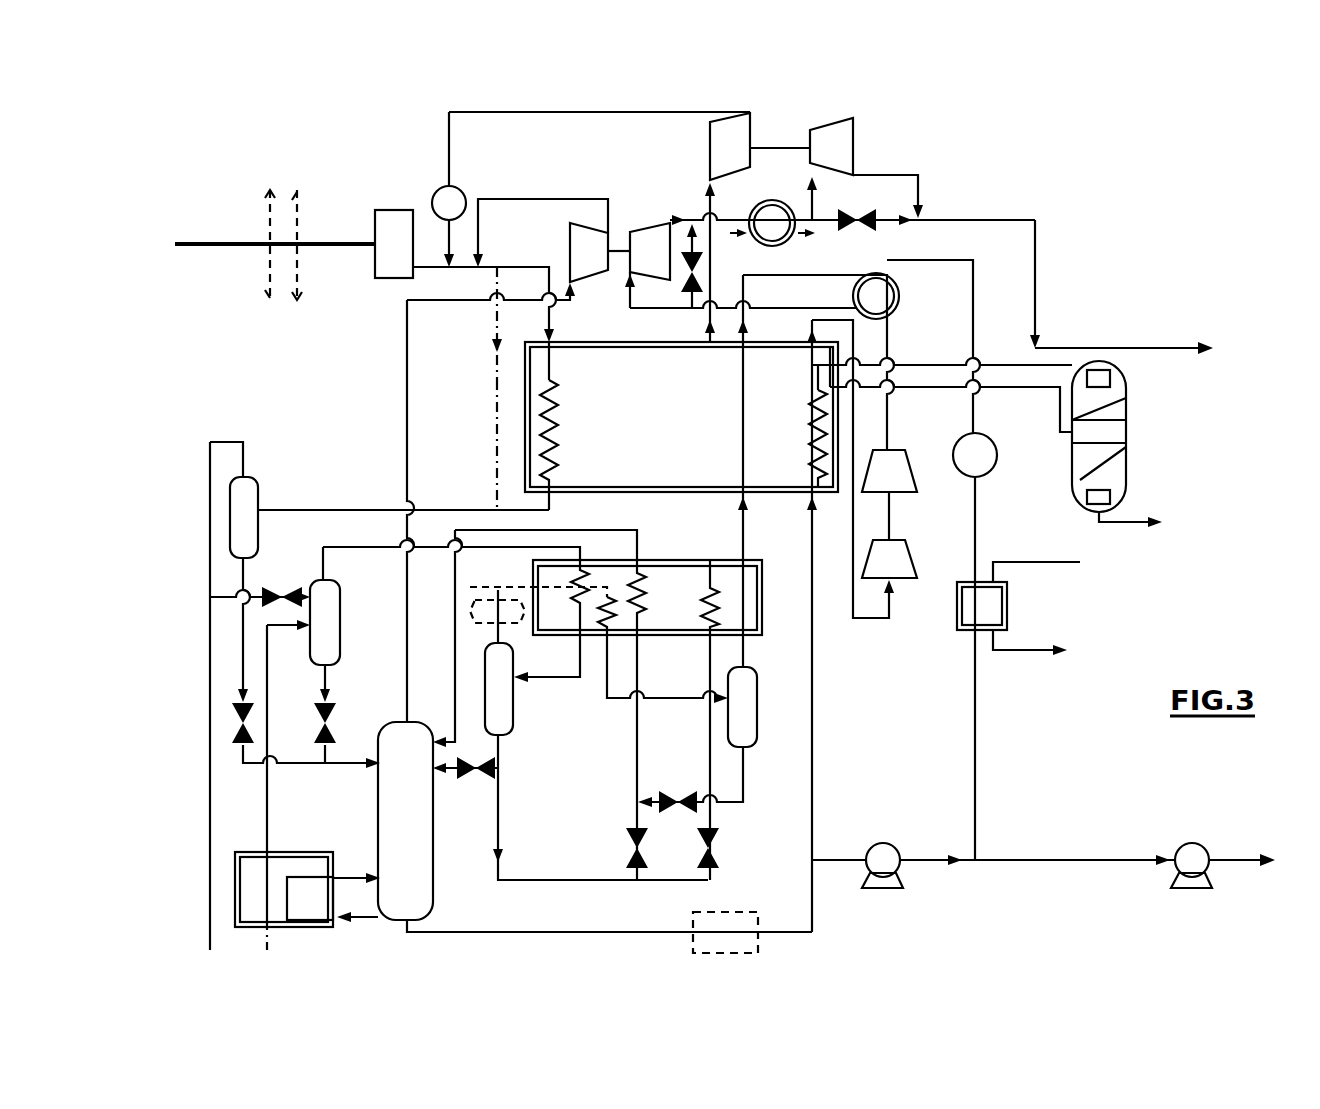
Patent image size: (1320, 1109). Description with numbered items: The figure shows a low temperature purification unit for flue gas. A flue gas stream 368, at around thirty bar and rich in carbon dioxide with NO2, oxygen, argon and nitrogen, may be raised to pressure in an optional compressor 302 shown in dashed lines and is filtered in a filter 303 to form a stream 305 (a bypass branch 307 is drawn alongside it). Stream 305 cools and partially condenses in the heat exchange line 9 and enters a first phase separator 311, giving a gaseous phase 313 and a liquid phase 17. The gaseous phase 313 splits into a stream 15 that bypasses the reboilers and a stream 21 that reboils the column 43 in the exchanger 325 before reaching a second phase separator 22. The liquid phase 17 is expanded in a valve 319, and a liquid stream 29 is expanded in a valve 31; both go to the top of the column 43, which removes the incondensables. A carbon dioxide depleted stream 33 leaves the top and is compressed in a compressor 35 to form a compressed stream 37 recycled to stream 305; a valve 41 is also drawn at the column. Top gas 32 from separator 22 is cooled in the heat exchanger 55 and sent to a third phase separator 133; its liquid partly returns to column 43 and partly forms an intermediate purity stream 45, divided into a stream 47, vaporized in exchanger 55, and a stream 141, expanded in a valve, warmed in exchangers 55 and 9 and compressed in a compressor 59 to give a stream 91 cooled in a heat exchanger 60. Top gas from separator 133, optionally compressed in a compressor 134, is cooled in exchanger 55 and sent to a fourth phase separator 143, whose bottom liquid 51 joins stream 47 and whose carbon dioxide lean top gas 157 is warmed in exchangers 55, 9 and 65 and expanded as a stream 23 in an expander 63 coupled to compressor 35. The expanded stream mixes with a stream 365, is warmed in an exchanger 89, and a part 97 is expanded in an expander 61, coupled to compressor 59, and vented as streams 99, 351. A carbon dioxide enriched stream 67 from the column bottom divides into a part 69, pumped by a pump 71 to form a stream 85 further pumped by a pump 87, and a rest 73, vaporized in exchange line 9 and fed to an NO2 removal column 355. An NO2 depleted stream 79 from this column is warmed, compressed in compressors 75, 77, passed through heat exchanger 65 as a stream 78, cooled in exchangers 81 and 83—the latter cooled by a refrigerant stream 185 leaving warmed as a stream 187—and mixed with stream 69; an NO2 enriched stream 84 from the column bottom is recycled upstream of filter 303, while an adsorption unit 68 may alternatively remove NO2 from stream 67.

The flue gas stream 368 is at (228, 243).
The optional compressor 302 is at (298, 277).
The filter 303 is at (388, 270).
The filtered flue gas stream 305 is at (462, 323).
The bypass line 307 is at (495, 433).
The heat exchanger 60 is at (434, 197).
The compressed stream 37 is at (538, 198).
The compressor 35 is at (583, 226).
The expanded stream 23 is at (630, 307).
The expander 63 is at (650, 232).
The stream not passing through expander 365 is at (832, 266).
The compressor 59 is at (710, 140).
The compressed stream 91 is at (723, 113).
The expander 61 is at (853, 147).
The heat exchanger 89 is at (750, 205).
The part of warmed stream 97 is at (813, 185).
The expanded stream 99 is at (913, 175).
The vent stream 351 is at (1035, 278).
The NO2 depleted stream 79 is at (1015, 367).
The stream from heat exchanger 65 78 is at (955, 255).
The heat exchanger 65 is at (917, 280).
The carbon dioxide lean top gas 157 is at (835, 308).
The remaining carbon dioxide enriched stream 73 is at (813, 740).
The heat exchange line 9 is at (640, 473).
The NO2 removal column 355 is at (1127, 435).
The NO2 enriched stream 84 is at (1115, 525).
The compressor 77 is at (915, 460).
The compressor 75 is at (908, 557).
The heat exchanger 81 is at (1022, 468).
The heat exchanger 83 is at (958, 607).
The refrigerant stream 185 is at (1040, 560).
The warmed refrigerant fluid 187 is at (1023, 650).
The product carbon dioxide stream 85 is at (1095, 858).
The pumped part of carbon dioxide enriched stream 69 is at (843, 858).
The pump 71 is at (887, 850).
The pump 87 is at (1185, 845).
The heat exchanger 55 is at (747, 610).
The compressor 134 is at (537, 600).
The top gas 32 is at (372, 545).
The carbon dioxide depleted stream 33 is at (412, 612).
The third phase separator 133 is at (515, 703).
The fourth phase separator 143 is at (757, 705).
The valve 41 is at (500, 757).
The intermediate purity stream 45 is at (507, 850).
The liquid stream 47 is at (633, 783).
The expanded liquid stream 141 is at (712, 812).
The bottom liquid 51 is at (745, 770).
The carbon dioxide enriched stream 67 is at (595, 925).
The adsorption unit 68 is at (725, 912).
The gaseous phase 313 is at (210, 498).
The first phase separator 311 is at (260, 482).
The bypass stream 15 is at (260, 571).
The reboiling stream 21 is at (203, 853).
The liquid phase 17 is at (245, 575).
The second phase separator 22 is at (340, 628).
The valve 31 is at (289, 785).
The valve 319 is at (240, 725).
The liquid stream 29 is at (335, 750).
The column 43 is at (437, 845).
The reboiler exchanger 325 is at (280, 877).